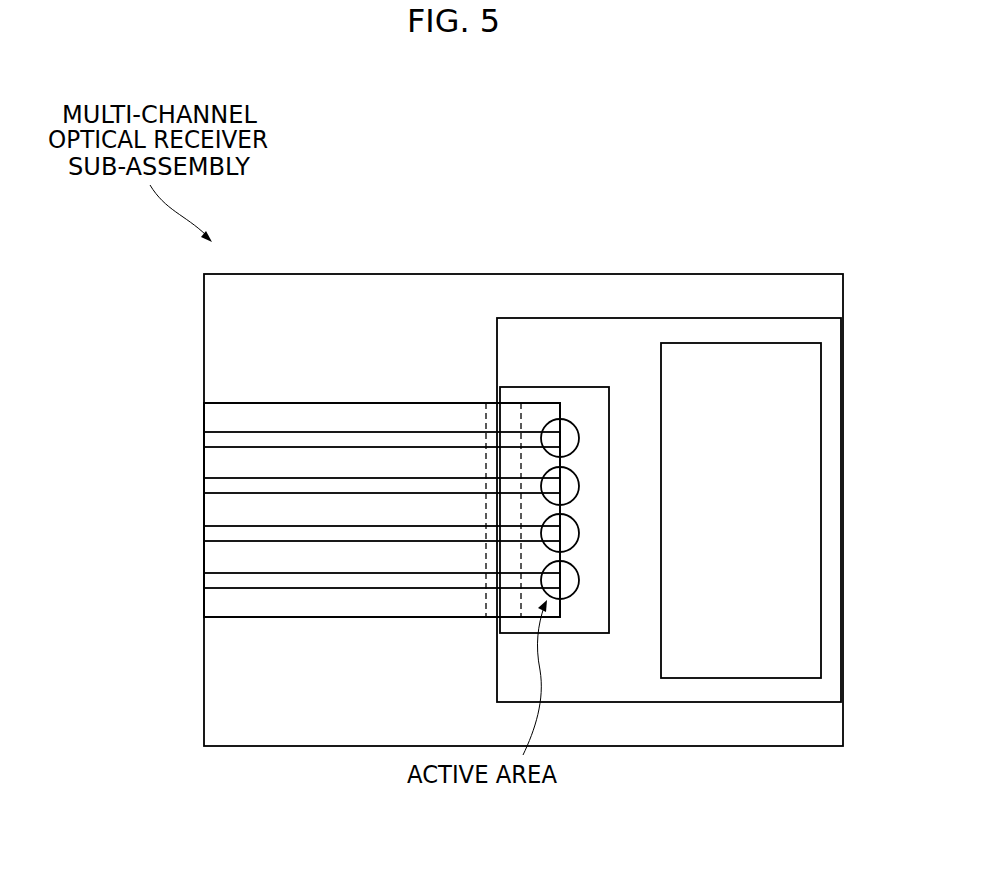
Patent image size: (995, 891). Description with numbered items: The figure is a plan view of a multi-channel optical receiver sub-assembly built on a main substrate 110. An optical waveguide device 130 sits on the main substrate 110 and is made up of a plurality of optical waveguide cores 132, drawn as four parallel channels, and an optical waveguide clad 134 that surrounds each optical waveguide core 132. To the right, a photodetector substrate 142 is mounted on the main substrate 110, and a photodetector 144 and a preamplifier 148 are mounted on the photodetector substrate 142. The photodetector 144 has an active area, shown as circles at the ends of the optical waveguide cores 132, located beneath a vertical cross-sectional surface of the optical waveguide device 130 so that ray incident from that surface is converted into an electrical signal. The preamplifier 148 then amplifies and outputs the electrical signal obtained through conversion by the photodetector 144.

The main substrate 110 is at (278, 746).
The optical waveguide device 130 is at (342, 403).
The optical waveguide core 132 is at (157, 703).
The optical waveguide clad 134 is at (226, 513).
The photodetector substrate 142 is at (787, 318).
The photodetector 144 is at (538, 386).
The preamplifier 148 is at (740, 678).